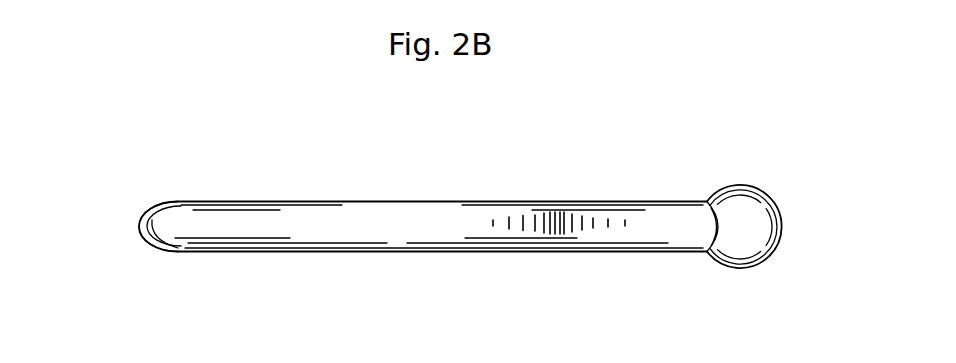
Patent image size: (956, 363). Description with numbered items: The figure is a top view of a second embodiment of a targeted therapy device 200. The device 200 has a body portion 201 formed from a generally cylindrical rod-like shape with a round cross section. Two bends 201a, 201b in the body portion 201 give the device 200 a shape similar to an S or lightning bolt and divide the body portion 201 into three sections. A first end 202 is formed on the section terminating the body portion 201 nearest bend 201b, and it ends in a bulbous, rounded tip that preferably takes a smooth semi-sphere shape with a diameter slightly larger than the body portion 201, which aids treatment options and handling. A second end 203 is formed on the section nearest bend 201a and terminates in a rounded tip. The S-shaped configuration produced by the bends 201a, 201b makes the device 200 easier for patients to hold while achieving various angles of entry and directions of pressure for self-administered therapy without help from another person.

The targeted therapy device 200 is at (464, 211).
The body portion 201 is at (428, 220).
The bend 201a is at (338, 178).
The bend 201b is at (575, 178).
The first end 202 is at (806, 246).
The second end 203 is at (114, 235).